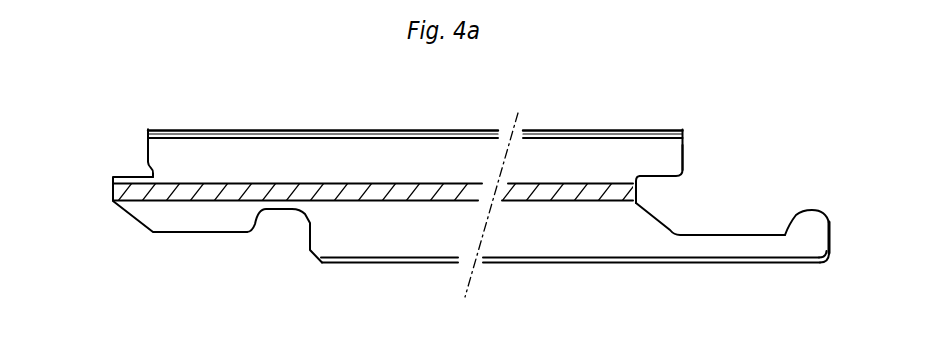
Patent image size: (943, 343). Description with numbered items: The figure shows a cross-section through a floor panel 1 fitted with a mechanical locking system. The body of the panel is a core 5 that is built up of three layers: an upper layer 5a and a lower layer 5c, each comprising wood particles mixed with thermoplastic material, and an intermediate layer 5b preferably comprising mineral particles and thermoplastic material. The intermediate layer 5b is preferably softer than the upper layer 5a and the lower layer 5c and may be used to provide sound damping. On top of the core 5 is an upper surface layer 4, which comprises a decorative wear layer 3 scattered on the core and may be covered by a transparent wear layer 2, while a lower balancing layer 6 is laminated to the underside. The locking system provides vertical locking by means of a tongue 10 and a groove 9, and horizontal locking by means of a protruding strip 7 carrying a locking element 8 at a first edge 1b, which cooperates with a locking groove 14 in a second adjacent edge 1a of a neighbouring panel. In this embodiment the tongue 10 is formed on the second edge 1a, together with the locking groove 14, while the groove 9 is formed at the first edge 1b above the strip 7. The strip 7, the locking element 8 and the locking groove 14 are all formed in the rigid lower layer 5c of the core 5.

The floor panel 1 is at (443, 117).
The second adjacent edge 1a is at (175, 121).
The first edge 1b is at (647, 119).
The transparent wear layer 2 is at (681, 130).
The decorative wear layer 3 is at (686, 138).
The upper surface layer 4 is at (147, 132).
The core 5 is at (335, 158).
The upper layer 5a is at (672, 151).
The intermediate layer 5b is at (112, 190).
The lower layer 5c is at (675, 232).
The lower balancing layer 6 is at (622, 263).
The protruding strip 7 is at (738, 245).
The locking element 8 is at (814, 222).
The groove 9 is at (687, 197).
The tongue 10 is at (96, 175).
The locking groove 14 is at (276, 216).